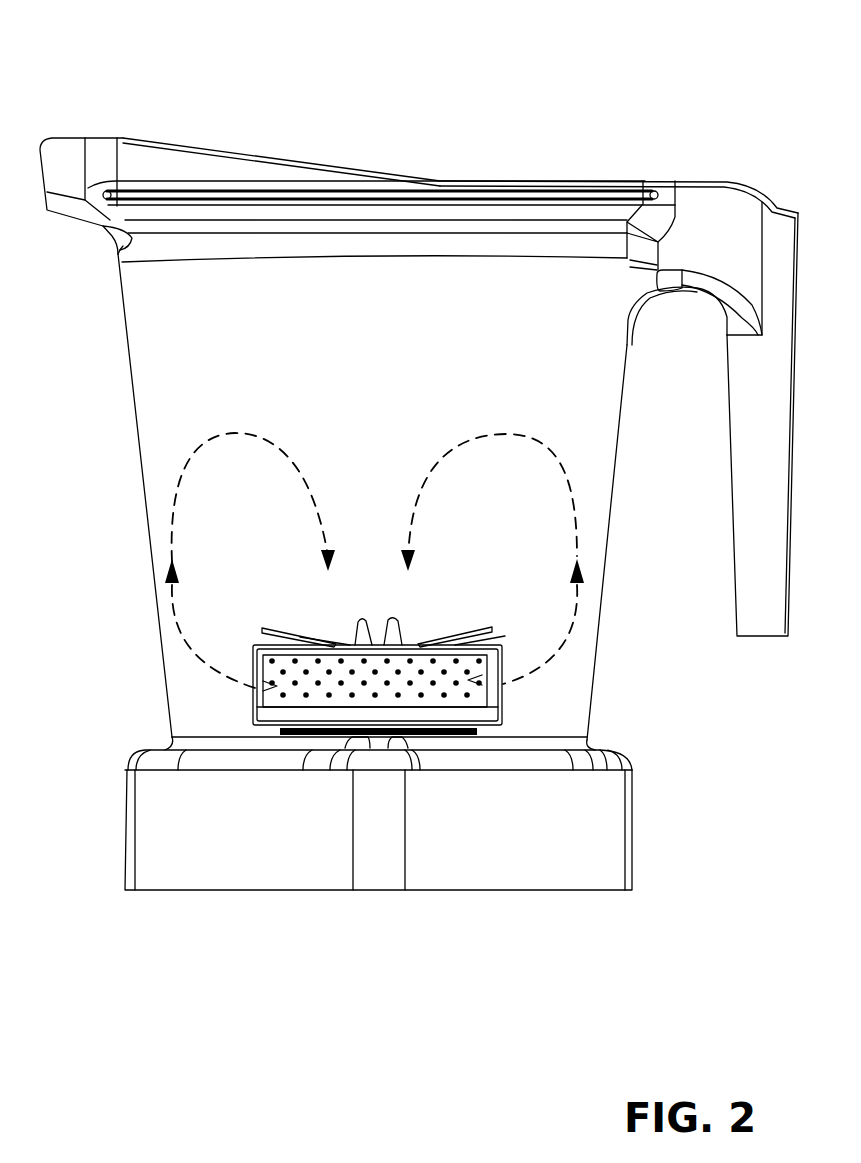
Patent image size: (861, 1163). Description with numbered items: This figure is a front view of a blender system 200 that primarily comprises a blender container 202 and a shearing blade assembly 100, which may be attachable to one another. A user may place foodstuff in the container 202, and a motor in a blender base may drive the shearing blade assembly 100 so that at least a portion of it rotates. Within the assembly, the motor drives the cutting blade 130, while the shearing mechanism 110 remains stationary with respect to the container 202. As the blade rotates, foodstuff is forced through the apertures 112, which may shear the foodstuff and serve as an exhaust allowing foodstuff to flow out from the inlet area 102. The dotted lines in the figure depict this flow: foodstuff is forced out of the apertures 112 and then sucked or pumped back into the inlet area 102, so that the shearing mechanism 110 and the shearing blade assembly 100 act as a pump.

The blender system 200 is at (128, 45).
The blender container 202 is at (532, 166).
The shearing blade assembly 100 is at (228, 714).
The inlet area 102 is at (428, 625).
The shearing mechanism 110 is at (522, 683).
The apertures 112 is at (472, 690).
The cutting blade 130 is at (355, 628).